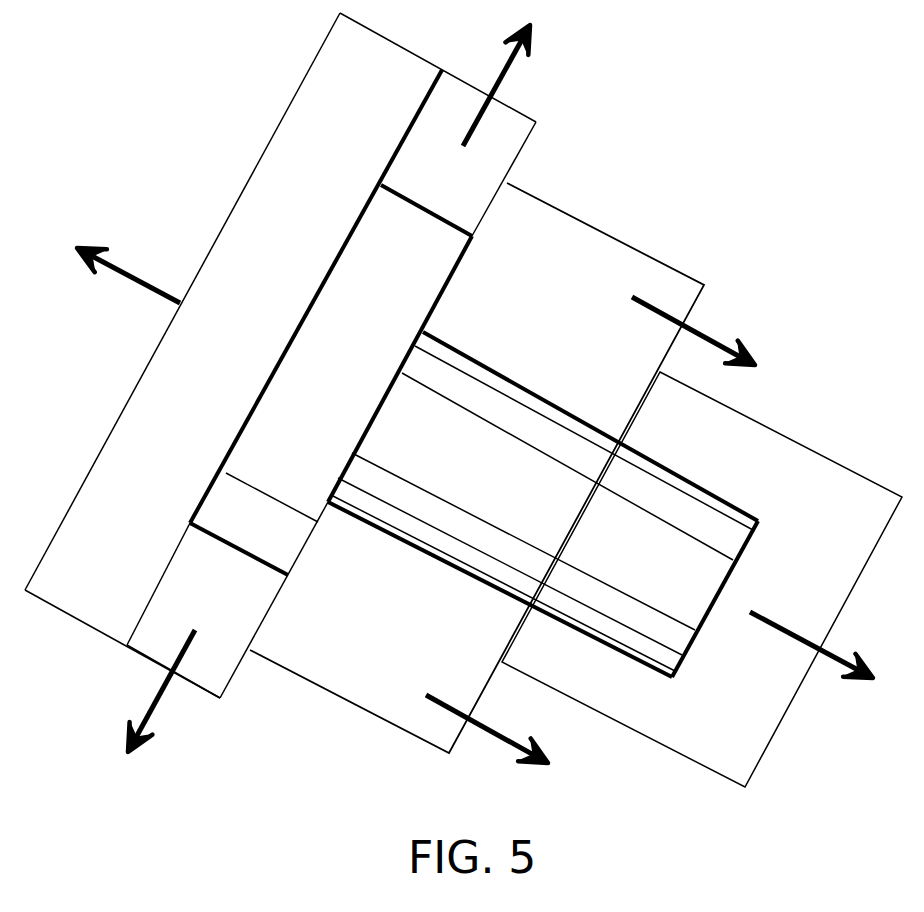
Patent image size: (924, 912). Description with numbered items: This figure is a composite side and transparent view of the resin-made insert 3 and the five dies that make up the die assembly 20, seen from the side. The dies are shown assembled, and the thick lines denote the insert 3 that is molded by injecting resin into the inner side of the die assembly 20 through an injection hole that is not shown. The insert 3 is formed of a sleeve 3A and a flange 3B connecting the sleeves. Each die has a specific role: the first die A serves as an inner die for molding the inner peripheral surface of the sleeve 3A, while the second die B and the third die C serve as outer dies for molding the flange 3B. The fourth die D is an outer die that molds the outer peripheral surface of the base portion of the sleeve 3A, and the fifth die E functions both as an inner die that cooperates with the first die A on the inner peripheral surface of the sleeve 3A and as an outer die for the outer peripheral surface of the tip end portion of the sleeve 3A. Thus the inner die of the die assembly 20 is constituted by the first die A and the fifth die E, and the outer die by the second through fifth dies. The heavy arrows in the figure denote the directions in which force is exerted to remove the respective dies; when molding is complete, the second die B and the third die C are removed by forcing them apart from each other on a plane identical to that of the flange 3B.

The die assembly 20 is at (694, 119).
The insert 3 is at (470, 351).
The sleeve 3A is at (508, 373).
The flange 3B is at (430, 208).
The first die A is at (280, 355).
The second die B is at (207, 610).
The third die C is at (417, 325).
The fourth die D is at (542, 501).
The fifth die E is at (702, 579).